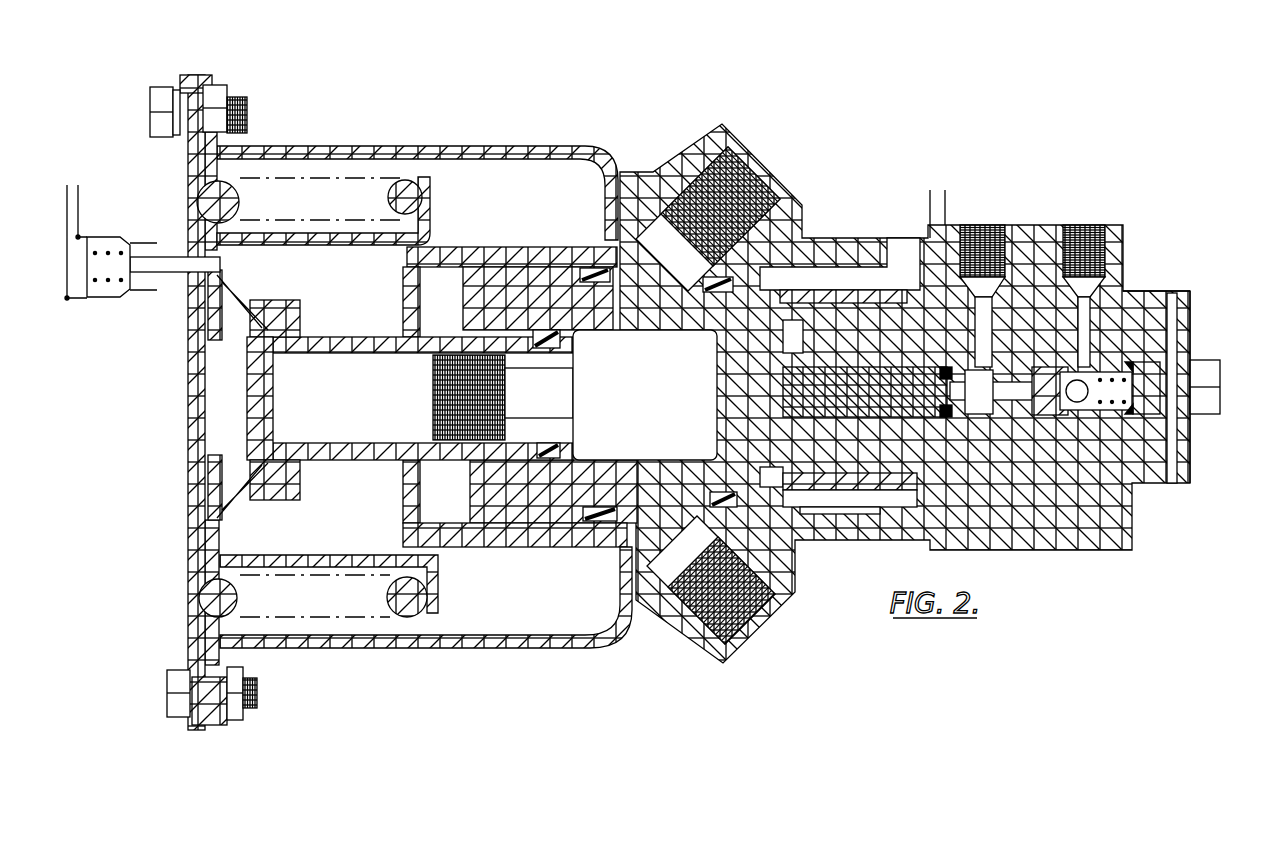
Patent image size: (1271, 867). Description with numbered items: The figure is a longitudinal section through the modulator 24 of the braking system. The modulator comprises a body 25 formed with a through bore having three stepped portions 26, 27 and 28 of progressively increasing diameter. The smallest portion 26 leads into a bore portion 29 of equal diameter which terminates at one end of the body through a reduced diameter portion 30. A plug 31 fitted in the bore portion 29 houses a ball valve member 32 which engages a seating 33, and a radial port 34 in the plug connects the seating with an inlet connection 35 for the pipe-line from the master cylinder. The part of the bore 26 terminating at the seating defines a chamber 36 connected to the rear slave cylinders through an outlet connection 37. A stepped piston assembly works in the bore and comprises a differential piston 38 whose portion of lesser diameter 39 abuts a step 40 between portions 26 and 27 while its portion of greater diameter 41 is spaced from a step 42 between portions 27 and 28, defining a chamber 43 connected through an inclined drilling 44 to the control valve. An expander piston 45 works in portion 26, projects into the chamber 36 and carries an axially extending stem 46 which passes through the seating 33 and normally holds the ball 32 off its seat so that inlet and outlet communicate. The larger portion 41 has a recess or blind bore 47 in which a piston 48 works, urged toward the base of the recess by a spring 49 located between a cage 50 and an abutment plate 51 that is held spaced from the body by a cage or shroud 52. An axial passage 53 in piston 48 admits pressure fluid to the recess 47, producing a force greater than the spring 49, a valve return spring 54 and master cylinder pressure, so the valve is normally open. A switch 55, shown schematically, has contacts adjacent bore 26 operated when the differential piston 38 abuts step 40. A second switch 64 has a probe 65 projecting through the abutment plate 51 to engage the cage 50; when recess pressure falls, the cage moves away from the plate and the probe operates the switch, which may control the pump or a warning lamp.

The modulator 24 is at (597, 132).
The body 25 is at (832, 255).
The smallest diameter bore portion 26 is at (893, 330).
The intermediate bore portion 27 is at (760, 292).
The largest diameter bore portion 28 is at (523, 268).
The bore portion 29 is at (1152, 340).
The reduced diameter portion 30 is at (1015, 378).
The plug 31 is at (1183, 370).
The valve member 32 is at (1162, 405).
The seating 33 is at (1076, 402).
The radial port 34 is at (1118, 342).
The inlet connection 35 is at (1083, 310).
The chamber 36 is at (985, 407).
The outlet connection 37 is at (982, 305).
The differential piston 38 is at (600, 262).
The portion of lesser diameter 39 is at (770, 300).
The step 40 is at (783, 440).
The portion of greater diameter 41 is at (490, 292).
The step 42 is at (700, 503).
The chamber 43 is at (646, 512).
The inclined drilling 44 is at (666, 530).
The expander piston 45 is at (885, 402).
The stem 46 is at (1020, 397).
The recess or blind bore 47 is at (656, 447).
The piston 48 is at (562, 350).
The spring 49 is at (300, 195).
The cage 50 is at (352, 235).
The abutment plate 51 is at (188, 590).
The cage or shroud 52 is at (410, 641).
The axial passage 53 is at (362, 430).
The valve return spring 54 is at (1190, 346).
The switch 55 is at (843, 300).
The second switch 64 is at (108, 237).
The probe 65 is at (180, 272).